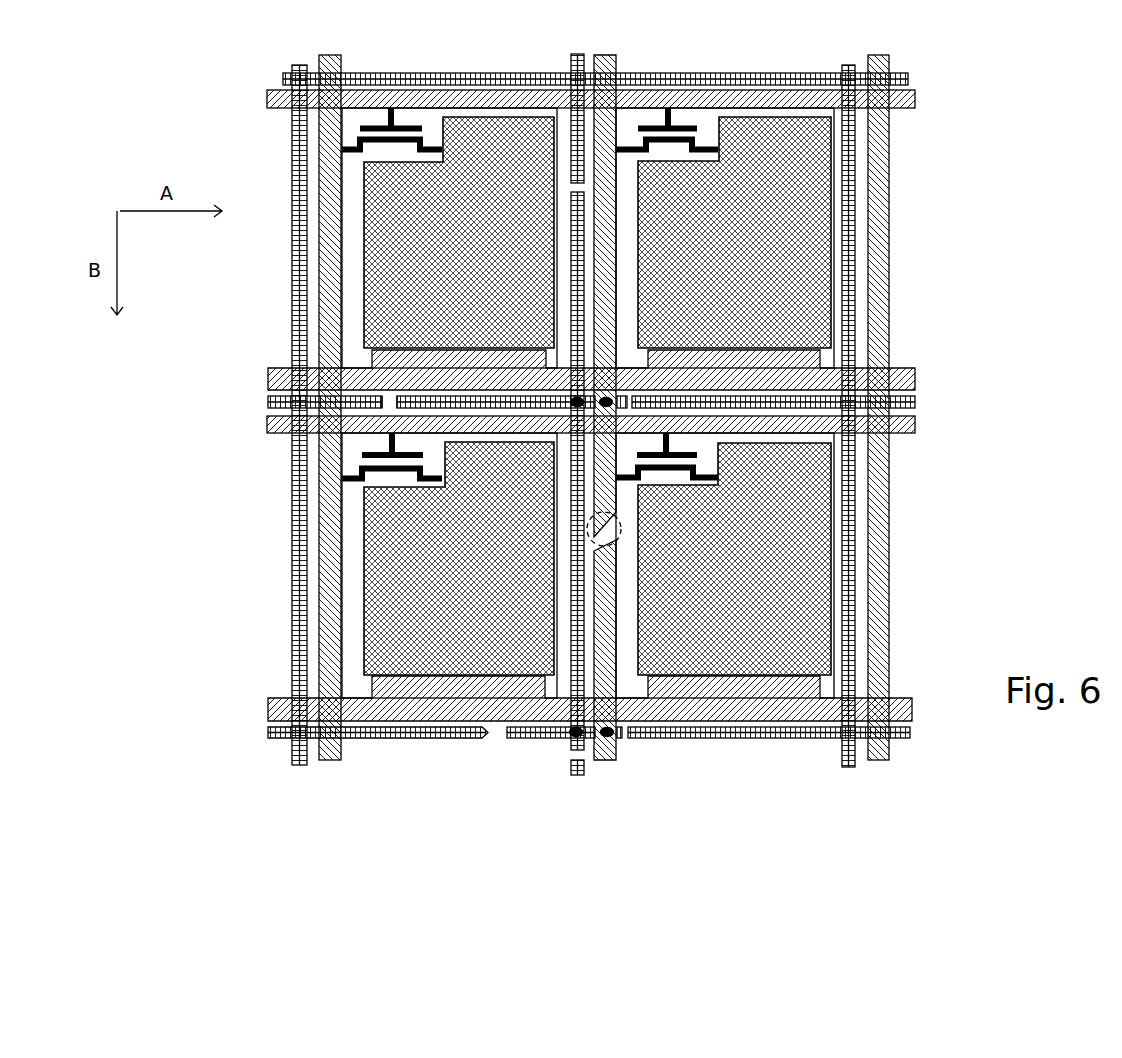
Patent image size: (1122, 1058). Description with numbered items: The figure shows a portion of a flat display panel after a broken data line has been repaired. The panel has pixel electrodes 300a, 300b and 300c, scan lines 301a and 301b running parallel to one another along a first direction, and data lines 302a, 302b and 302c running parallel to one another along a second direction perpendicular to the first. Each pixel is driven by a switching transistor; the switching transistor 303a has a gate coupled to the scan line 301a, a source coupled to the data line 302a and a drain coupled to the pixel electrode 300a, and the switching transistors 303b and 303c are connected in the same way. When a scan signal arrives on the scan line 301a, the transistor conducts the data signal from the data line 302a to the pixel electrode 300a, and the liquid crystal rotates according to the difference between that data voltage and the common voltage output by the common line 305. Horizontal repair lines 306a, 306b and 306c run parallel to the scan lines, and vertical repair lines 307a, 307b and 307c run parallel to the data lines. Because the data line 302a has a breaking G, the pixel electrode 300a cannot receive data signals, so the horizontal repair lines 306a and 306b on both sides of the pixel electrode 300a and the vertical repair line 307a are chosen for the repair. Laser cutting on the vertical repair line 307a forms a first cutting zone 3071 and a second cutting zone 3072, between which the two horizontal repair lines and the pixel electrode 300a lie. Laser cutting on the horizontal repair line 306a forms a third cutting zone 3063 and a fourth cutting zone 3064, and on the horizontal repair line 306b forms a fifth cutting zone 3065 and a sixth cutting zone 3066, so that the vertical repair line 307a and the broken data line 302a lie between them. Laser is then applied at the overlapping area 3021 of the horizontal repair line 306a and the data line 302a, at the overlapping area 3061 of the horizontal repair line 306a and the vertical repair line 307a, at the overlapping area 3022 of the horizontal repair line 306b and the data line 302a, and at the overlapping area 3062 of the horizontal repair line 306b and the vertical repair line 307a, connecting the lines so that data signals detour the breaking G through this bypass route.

The pixel electrode 300a is at (755, 625).
The pixel electrode 300b is at (385, 600).
The pixel electrode 300c is at (755, 298).
The scan line 301a is at (302, 425).
The scan line 301b is at (272, 101).
The data line 302a is at (768, 410).
The data line 302b is at (332, 57).
The data line 302c is at (876, 60).
The overlapping area 3021 is at (608, 401).
The overlapping area 3022 is at (607, 733).
The switching transistor 303a is at (718, 479).
The switching transistor 303b is at (355, 478).
The switching transistor 303c is at (718, 153).
The common line 305 is at (270, 380).
The horizontal repair line 306a is at (570, 371).
The horizontal repair line 306b is at (634, 758).
The horizontal repair line 306c is at (910, 80).
The overlapping area 3061 is at (575, 400).
The overlapping area 3062 is at (574, 733).
The third cutting zone 3063 is at (390, 402).
The fourth cutting zone 3064 is at (625, 401).
The fifth cutting zone 3065 is at (492, 735).
The sixth cutting zone 3066 is at (628, 735).
The vertical repair line 307a is at (406, 434).
The vertical repair line 307b is at (845, 760).
The vertical repair line 307c is at (298, 762).
The first cutting zone 3071 is at (577, 187).
The second cutting zone 3072 is at (572, 768).
The breaking G is at (622, 540).